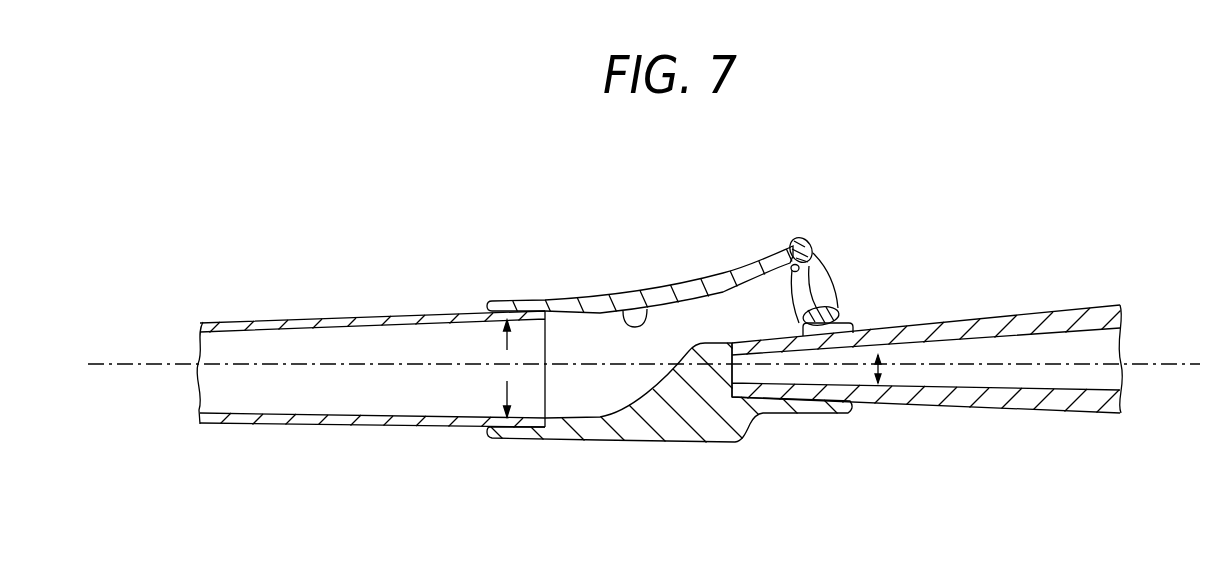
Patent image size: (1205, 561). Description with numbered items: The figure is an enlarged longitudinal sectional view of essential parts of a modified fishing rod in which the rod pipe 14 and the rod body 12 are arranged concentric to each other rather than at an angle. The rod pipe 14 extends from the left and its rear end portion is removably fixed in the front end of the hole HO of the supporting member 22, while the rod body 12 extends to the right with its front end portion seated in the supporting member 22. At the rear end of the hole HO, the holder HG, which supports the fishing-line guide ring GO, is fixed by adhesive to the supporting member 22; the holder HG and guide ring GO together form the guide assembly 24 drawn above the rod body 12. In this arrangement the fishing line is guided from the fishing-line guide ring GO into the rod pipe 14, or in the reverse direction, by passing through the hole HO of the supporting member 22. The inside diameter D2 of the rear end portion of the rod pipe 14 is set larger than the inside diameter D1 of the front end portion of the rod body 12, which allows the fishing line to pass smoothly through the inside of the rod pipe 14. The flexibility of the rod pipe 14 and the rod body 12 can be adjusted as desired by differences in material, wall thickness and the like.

The rod body 12 is at (1018, 405).
The rod pipe 14 is at (383, 317).
The supporting member 22 is at (670, 360).
The seal unit 24 is at (910, 242).
The holder HG is at (807, 241).
The fishing-line guide ring GO is at (826, 306).
The hole HO is at (646, 320).
The inside diameter of the rod body D1 is at (900, 367).
The inside diameter of the rod pipe D2 is at (503, 368).